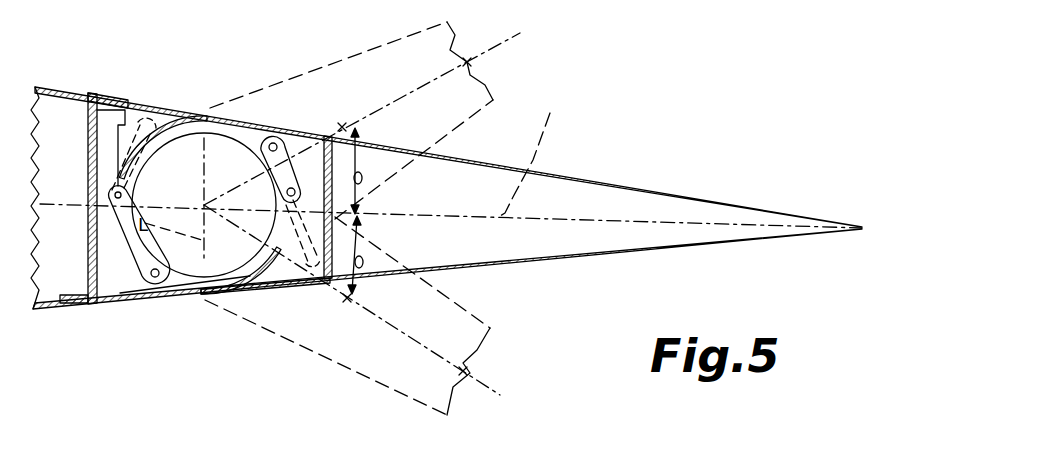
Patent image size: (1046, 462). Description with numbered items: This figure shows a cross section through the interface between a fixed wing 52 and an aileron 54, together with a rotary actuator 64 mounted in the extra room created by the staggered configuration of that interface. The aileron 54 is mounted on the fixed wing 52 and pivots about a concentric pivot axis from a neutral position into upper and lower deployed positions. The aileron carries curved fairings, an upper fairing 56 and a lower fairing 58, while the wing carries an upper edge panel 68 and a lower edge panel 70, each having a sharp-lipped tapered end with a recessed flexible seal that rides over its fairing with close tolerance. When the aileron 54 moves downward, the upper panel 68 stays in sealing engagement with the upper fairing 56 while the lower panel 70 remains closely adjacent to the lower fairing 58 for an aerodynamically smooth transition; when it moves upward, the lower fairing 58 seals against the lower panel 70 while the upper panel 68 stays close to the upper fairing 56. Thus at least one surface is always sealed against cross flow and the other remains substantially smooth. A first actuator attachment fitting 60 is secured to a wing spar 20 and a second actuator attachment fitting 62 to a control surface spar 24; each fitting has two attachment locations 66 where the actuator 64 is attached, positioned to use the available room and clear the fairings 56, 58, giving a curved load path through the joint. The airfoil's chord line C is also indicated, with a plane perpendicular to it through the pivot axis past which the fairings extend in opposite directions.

The wing spar 20 is at (88, 160).
The control surface spar 24 is at (342, 127).
The fixed wing 52 is at (50, 88).
The aileron 54 is at (600, 182).
The upper fairing 56 is at (157, 103).
The lower fairing 58 is at (279, 286).
The first actuator attachment fitting 60 is at (180, 295).
The second actuator attachment fitting 62 is at (263, 168).
The rotary actuator 64 is at (190, 176).
The attachment locations 66 is at (280, 133).
The upper edge panel 68 is at (170, 112).
The lower edge panel 70 is at (262, 292).
The chord line C is at (534, 147).